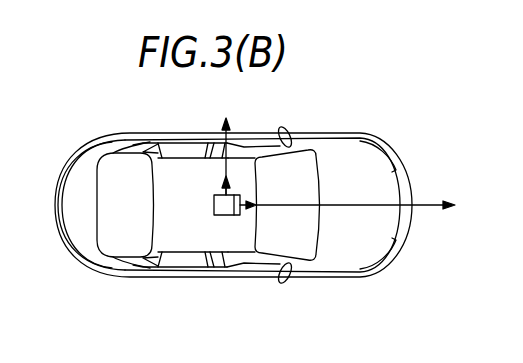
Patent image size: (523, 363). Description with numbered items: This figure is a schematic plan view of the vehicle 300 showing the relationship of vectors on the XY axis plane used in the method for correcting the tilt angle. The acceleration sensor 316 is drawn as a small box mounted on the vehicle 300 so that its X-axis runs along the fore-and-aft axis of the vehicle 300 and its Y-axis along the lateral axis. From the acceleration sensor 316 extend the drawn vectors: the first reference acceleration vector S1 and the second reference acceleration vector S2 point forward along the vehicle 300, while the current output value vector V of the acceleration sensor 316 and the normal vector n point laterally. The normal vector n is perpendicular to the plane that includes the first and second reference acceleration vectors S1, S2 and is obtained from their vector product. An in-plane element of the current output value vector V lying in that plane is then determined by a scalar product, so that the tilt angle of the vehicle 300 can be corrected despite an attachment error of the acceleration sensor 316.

The vehicle 300 is at (130, 133).
The acceleration sensor 316 is at (216, 208).
The normal vector n is at (249, 114).
The current output value vector of acceleration sensor V is at (247, 182).
The first reference acceleration vector S1 is at (279, 184).
The second reference acceleration vector S2 is at (444, 184).